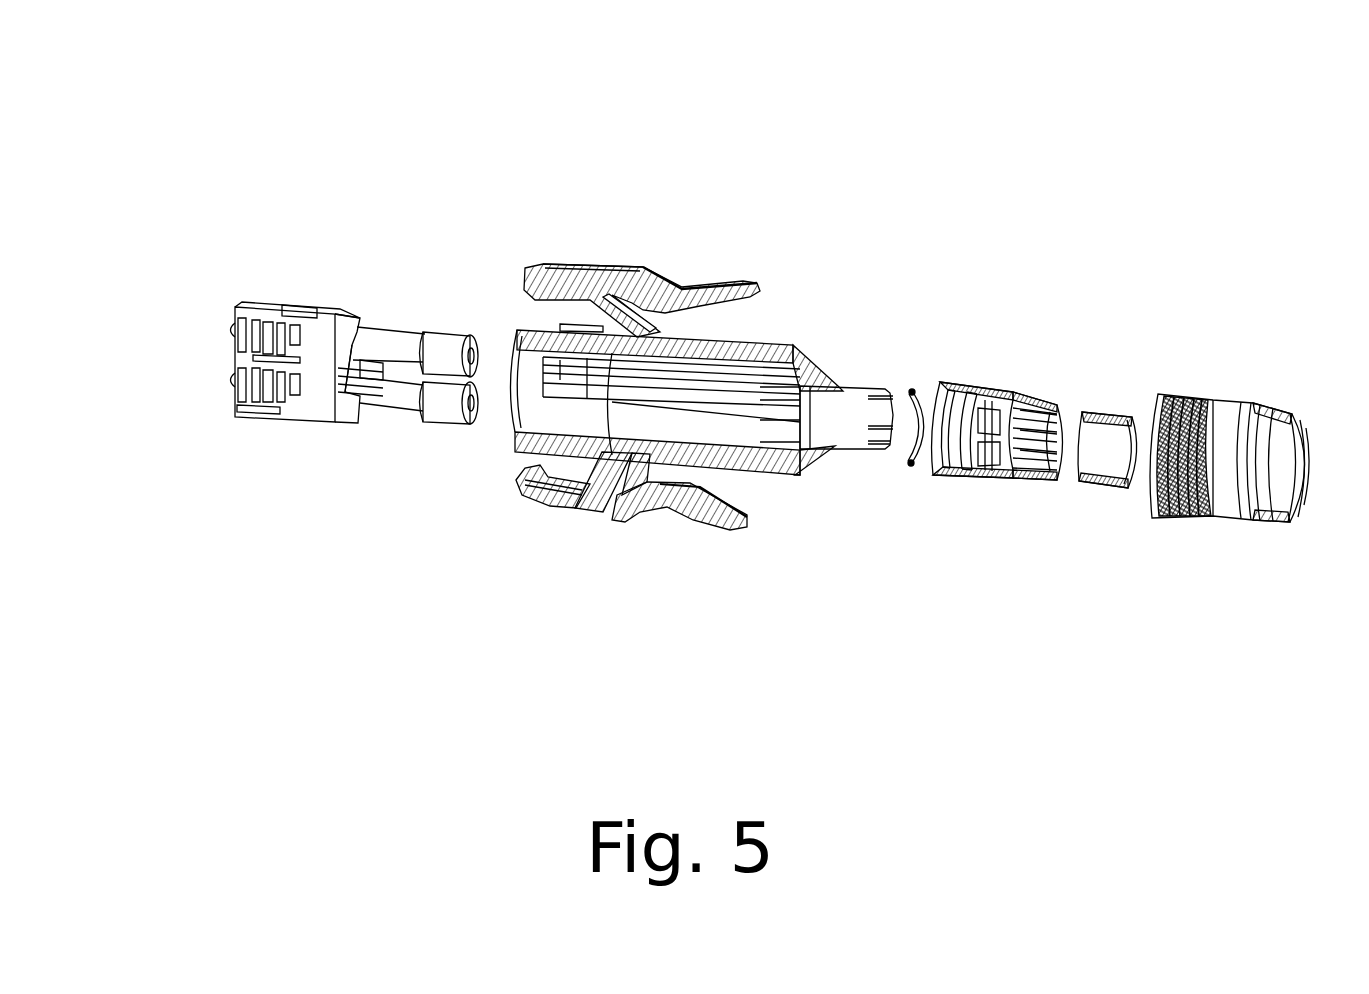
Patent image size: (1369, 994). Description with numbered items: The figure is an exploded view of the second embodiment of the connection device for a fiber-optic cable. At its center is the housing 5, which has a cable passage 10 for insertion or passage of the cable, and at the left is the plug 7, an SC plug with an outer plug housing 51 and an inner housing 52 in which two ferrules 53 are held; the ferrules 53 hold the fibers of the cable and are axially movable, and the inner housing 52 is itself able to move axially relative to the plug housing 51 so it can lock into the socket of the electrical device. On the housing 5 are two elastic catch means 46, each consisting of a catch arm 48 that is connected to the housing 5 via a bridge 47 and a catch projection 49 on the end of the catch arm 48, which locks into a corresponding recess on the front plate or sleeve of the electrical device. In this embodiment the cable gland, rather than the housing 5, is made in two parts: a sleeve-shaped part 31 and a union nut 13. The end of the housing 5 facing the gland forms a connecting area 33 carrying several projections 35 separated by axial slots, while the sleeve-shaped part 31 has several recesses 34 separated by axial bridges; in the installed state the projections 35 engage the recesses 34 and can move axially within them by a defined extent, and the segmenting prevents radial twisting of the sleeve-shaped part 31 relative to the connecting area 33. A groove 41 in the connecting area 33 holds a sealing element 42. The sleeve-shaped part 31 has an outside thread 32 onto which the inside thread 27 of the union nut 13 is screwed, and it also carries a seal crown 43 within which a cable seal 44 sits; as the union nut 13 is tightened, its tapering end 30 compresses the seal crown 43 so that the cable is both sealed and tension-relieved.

The housing 5 is at (803, 270).
The plug 7 is at (303, 437).
The cable passage 10 is at (744, 432).
The union nut 13 is at (1183, 518).
The inside thread 27 is at (1191, 397).
The tapering end 30 is at (1265, 410).
The sleeve-shaped part 31 is at (1004, 372).
The outside thread 32 is at (963, 490).
The connecting area 33 is at (820, 476).
The recesses 34 is at (975, 385).
The projections 35 is at (855, 470).
The groove 41 is at (852, 388).
The sealing element 42 is at (922, 470).
The seal crown 43 is at (1028, 480).
The cable seal 44 is at (1105, 412).
The elastic catch means 46 is at (604, 254).
The bridge 47 is at (615, 495).
The catch arm 48 is at (573, 490).
The catch projections 49 is at (500, 483).
The outer plug housing 51 is at (333, 315).
The inner housing 52 is at (250, 305).
The ferrules 53 is at (225, 380).